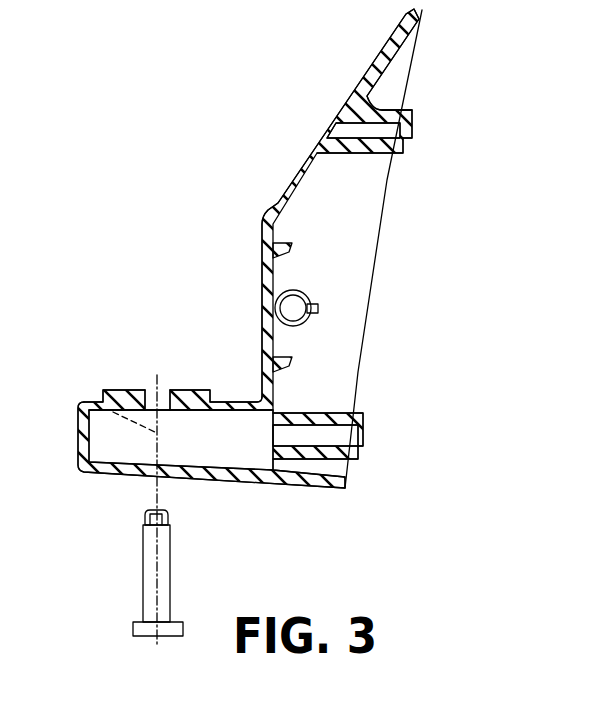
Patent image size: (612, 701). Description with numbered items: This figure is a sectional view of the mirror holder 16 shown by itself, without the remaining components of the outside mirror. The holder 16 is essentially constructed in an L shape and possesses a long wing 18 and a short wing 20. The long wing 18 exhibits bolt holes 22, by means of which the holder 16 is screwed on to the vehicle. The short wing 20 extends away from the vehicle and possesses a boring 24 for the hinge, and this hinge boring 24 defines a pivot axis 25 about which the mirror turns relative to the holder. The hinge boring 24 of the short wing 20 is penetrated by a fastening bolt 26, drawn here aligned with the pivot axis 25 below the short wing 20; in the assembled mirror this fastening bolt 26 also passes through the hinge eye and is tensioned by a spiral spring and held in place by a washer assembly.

The mirror holder 16 is at (242, 119).
The long wing 18 is at (390, 72).
The short wing 20 is at (235, 460).
The bolt holes 22 is at (402, 135).
The boring 24 is at (177, 364).
The pivot axis 25 is at (97, 402).
The fastening bolt 26 is at (143, 572).